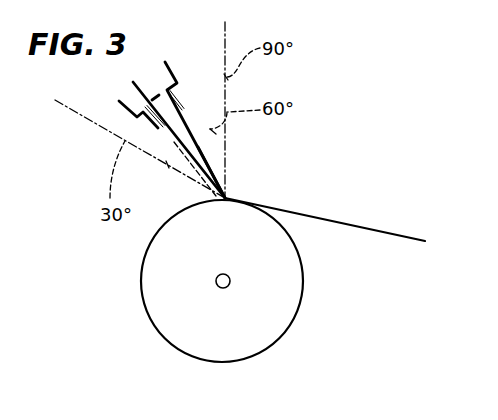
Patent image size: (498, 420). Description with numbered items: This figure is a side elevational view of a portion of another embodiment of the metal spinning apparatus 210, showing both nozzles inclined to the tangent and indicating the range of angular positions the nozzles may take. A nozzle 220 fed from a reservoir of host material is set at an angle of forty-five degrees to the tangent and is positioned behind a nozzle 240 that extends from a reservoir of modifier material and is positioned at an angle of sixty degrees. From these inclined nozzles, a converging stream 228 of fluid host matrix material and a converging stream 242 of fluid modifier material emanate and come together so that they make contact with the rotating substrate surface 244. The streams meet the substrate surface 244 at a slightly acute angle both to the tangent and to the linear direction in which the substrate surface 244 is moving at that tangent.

The metal spinning apparatus 210 is at (307, 174).
The nozzle 220 is at (157, 124).
The stream of fluid host matrix material 228 is at (196, 165).
The nozzle 240 is at (181, 111).
The stream of fluid modifier material 242 is at (202, 155).
The rotating substrate surface 244 is at (302, 278).